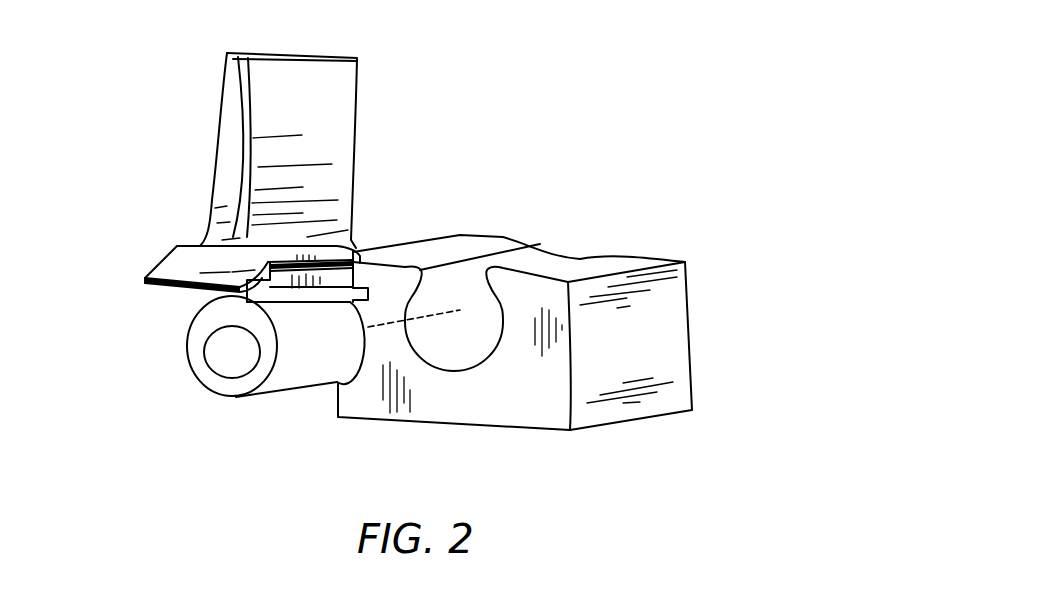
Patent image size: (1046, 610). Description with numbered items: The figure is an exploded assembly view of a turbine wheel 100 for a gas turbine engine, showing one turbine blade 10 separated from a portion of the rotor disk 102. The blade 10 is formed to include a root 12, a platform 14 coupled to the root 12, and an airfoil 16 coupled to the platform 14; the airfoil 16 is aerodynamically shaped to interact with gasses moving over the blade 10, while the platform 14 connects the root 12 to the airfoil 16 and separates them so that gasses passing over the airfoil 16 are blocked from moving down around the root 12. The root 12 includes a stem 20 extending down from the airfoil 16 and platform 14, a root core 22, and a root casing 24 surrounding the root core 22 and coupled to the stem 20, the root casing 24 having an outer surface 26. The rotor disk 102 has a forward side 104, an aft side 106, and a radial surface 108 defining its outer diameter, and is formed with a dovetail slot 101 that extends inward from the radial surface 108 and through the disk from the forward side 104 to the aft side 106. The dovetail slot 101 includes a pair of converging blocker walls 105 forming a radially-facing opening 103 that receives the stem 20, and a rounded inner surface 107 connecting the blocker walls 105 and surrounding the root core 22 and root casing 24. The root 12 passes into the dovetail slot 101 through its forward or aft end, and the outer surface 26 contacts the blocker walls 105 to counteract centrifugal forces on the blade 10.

The turbine blade 10 is at (255, 252).
The root 12 is at (222, 336).
The platform 14 is at (241, 236).
The airfoil 16 is at (262, 150).
The stem 20 is at (240, 304).
The root core 22 is at (185, 359).
The root casing 24 is at (193, 380).
The outer surface 26 is at (300, 381).
The turbine wheel 100 is at (441, 266).
The dovetail slot 101 is at (462, 332).
The rotor disk 102 is at (567, 332).
The radially-facing opening 103 is at (519, 233).
The forward side 104 is at (457, 332).
The blocker walls 105 is at (462, 239).
The aft side 106 is at (670, 346).
The rounded inner surface 107 is at (454, 410).
The radial surface 108 is at (534, 239).